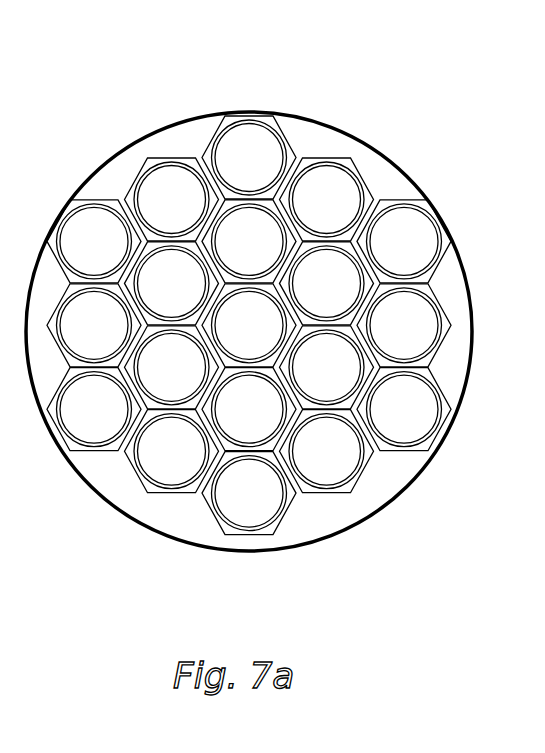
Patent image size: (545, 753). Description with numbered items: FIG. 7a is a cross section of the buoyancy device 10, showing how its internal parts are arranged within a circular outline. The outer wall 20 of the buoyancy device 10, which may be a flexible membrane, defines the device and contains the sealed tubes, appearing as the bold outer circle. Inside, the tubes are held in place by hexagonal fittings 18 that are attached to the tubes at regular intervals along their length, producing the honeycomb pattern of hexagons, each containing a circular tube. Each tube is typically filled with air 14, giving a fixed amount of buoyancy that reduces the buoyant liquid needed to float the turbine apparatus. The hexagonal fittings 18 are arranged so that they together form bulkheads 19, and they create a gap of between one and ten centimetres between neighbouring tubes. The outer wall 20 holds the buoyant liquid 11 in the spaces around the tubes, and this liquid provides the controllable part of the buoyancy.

The buoyancy device 10 is at (263, 327).
The buoyant liquid 11 is at (274, 277).
The air 14 is at (407, 413).
The hexagonal fitting 18 is at (172, 158).
The bulkhead 19 is at (90, 188).
The outer wall 20 is at (332, 125).